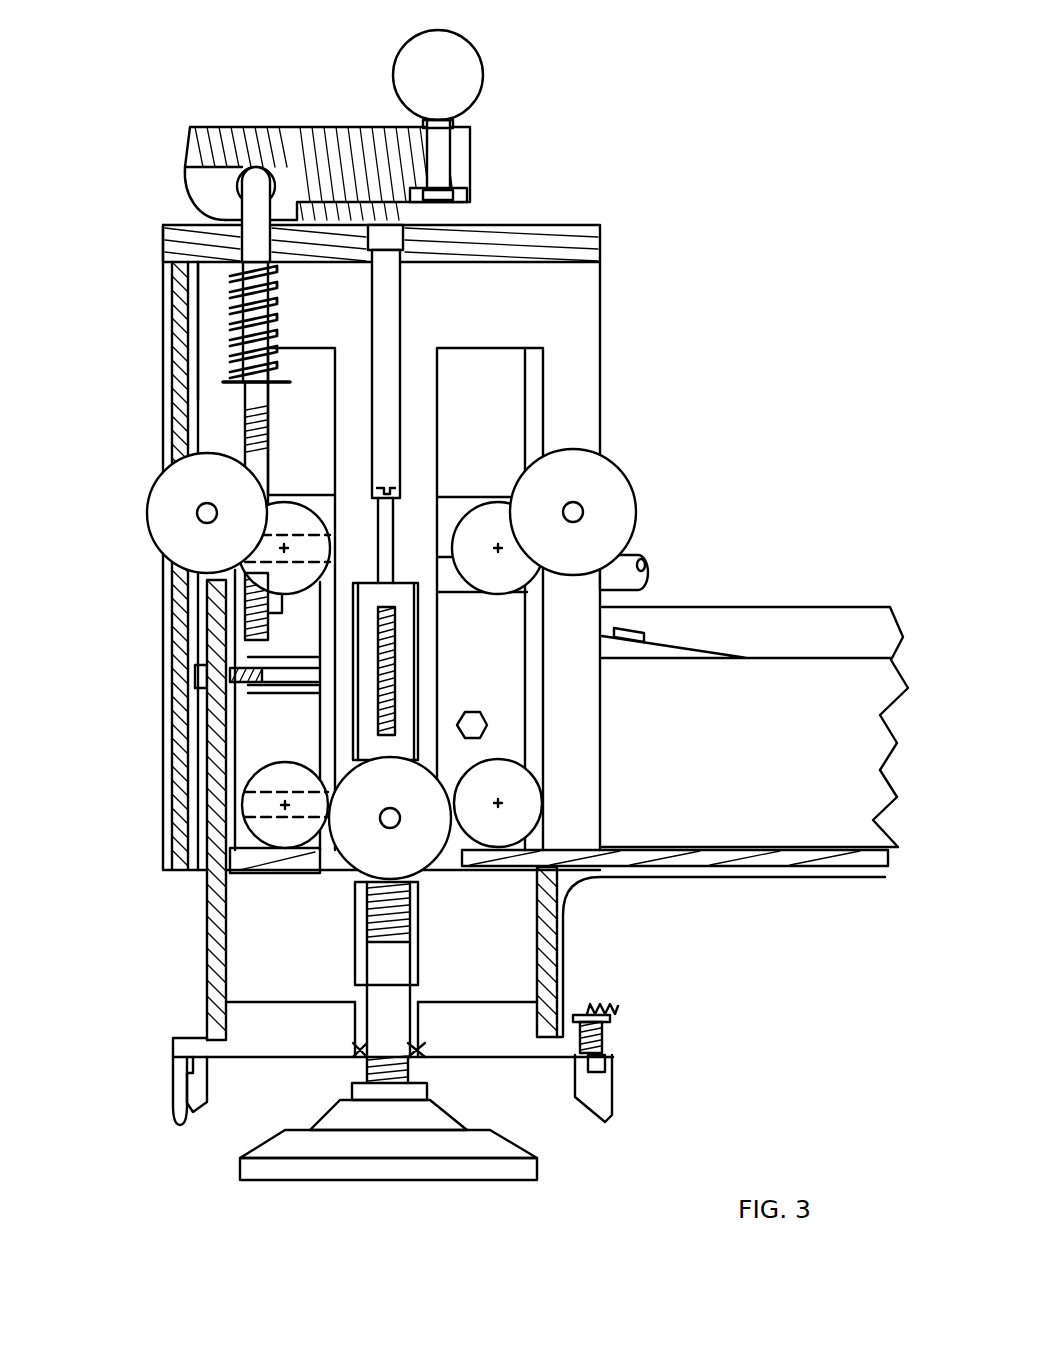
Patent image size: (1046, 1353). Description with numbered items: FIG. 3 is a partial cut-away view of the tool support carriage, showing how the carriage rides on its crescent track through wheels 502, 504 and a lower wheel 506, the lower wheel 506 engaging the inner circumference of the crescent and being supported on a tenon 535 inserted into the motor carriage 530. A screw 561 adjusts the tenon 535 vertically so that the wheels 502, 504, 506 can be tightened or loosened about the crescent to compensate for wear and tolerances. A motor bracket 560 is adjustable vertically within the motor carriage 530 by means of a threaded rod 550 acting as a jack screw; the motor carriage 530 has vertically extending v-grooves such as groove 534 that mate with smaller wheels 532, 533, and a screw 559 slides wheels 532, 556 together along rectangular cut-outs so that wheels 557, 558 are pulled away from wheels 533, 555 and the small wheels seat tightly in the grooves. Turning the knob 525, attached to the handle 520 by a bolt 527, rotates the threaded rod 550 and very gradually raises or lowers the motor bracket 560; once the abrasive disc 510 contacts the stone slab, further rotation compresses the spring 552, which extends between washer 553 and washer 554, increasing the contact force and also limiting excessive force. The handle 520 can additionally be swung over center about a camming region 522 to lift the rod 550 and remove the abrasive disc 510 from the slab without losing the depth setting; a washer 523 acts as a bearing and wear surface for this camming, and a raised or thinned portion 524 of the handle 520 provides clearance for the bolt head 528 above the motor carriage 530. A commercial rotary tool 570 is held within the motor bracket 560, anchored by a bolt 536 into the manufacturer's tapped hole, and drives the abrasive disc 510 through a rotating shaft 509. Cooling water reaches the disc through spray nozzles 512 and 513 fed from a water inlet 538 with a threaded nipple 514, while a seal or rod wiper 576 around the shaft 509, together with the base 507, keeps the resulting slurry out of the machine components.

The wheel 502 is at (165, 500).
The wheel 504 is at (625, 500).
The lower wheel 506 is at (405, 860).
The base 507 is at (245, 948).
The rotating shaft 509 is at (410, 1050).
The abrasive disc 510 is at (330, 1167).
The spray nozzle 512 is at (167, 1115).
The spray nozzle 513 is at (605, 1095).
The threaded nipple 514 is at (605, 1030).
The handle 520 is at (300, 130).
The camming region 522 is at (198, 192).
The washer 523 is at (240, 218).
The raised or thinned portion 524 is at (383, 207).
The knob 525 is at (472, 62).
The bolt 527 is at (440, 165).
The bolt head 528 is at (383, 205).
The motor carriage 530 is at (575, 325).
The smaller wheel 532 is at (262, 590).
The smaller wheel 533 is at (473, 525).
The v-groove 534 is at (325, 736).
The tenon 535 is at (410, 660).
The bolt 536 is at (482, 725).
The water inlet 538 is at (620, 1008).
The threaded rod 550 is at (255, 400).
The spring 552 is at (238, 303).
The washer 553 is at (205, 278).
The washer 554 is at (248, 385).
The wheel 555 is at (540, 812).
The wheel 556 is at (262, 845).
The wheel 557 is at (283, 830).
The wheel 558 is at (283, 580).
The screw 559 is at (245, 668).
The motor bracket 560 is at (448, 512).
The screw 561 is at (385, 542).
The rotary tool 570 is at (755, 727).
The seal or rod wiper 576 is at (355, 1045).